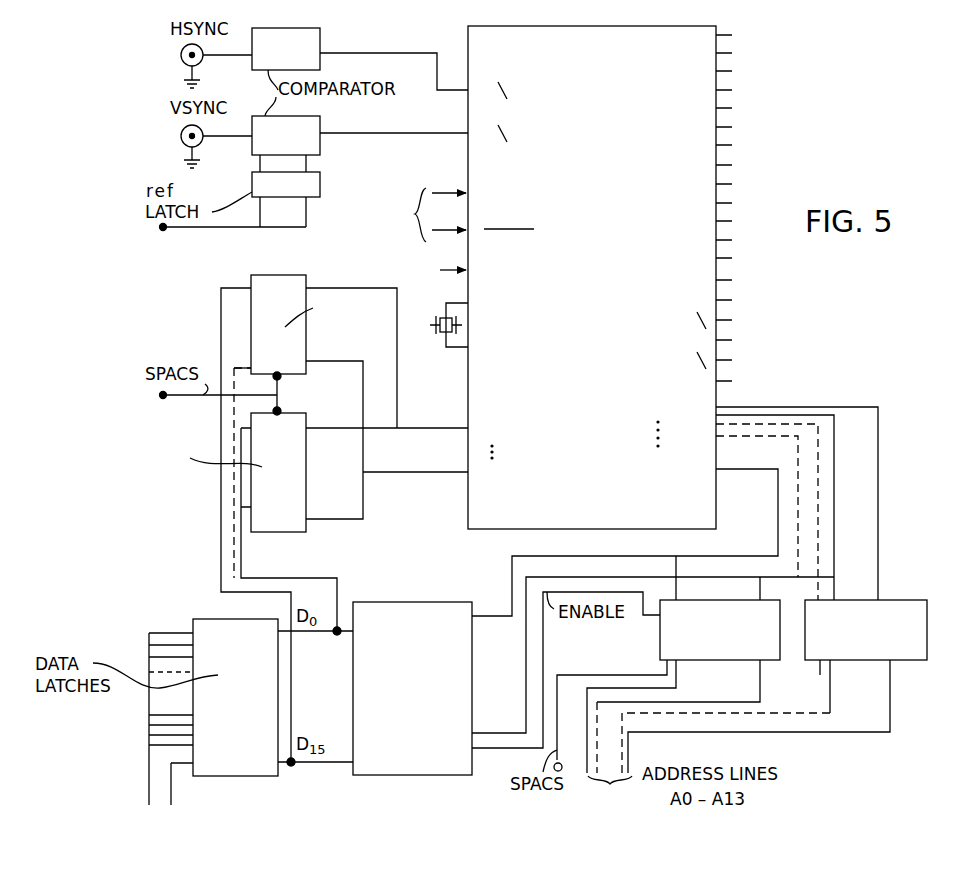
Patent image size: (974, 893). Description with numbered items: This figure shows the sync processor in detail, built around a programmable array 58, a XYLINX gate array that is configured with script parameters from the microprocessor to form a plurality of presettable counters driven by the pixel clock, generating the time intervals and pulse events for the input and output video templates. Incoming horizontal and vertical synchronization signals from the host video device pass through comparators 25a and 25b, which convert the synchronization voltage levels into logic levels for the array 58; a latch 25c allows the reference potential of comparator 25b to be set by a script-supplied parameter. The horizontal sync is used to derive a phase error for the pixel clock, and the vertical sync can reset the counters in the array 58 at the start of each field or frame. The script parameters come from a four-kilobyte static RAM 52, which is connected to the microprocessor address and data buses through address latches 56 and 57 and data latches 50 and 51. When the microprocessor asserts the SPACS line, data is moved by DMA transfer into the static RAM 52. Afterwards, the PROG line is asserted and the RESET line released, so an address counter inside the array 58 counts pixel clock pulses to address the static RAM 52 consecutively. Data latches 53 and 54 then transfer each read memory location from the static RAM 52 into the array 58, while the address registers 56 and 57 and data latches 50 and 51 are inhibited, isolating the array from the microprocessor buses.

The comparator 25a is at (320, 41).
The comparator 25b is at (320, 125).
The latch 25c is at (320, 184).
The data latch 53 is at (305, 281).
The data latch 54 is at (300, 532).
The programmable array 58 is at (543, 277).
The 4K static RAM 52 is at (422, 691).
The data latch 50 is at (213, 712).
The data latch 51 is at (213, 712).
The address latch 56 is at (660, 630).
The address latch 57 is at (927, 633).